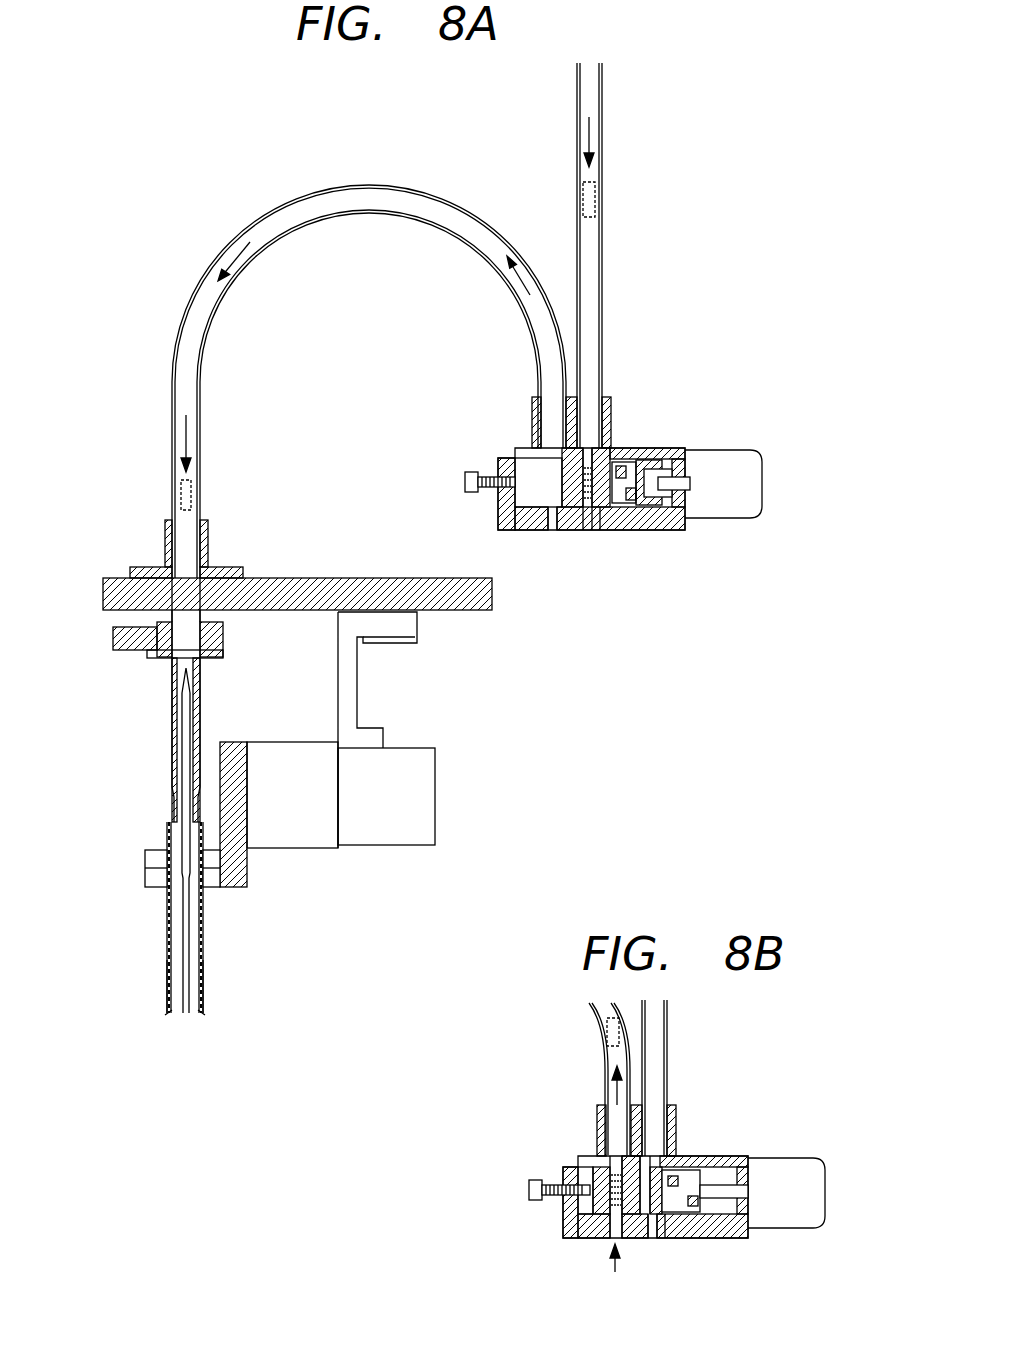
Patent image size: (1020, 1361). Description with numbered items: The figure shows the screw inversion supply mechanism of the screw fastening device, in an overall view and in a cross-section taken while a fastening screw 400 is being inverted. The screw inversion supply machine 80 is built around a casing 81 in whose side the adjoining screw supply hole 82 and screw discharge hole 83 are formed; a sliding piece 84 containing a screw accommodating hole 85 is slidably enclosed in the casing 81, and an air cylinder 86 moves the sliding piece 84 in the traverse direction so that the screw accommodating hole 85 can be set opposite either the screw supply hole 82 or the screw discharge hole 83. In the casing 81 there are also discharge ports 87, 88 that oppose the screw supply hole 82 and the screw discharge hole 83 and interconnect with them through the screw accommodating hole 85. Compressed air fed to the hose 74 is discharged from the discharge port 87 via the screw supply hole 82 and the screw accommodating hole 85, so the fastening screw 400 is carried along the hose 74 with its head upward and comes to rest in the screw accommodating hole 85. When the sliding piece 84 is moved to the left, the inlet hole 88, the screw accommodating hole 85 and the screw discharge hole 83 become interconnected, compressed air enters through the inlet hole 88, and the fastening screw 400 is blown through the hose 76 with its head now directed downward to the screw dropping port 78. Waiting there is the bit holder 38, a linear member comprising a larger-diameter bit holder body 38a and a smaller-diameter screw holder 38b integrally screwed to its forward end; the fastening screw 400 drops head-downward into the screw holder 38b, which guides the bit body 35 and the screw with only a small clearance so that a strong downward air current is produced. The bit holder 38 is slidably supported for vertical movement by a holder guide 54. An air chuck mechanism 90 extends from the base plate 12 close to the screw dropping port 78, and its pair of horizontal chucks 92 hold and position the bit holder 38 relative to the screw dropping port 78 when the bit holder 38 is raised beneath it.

In FIG. 8A, the base plate 12 is at (345, 578).
In FIG. 8A, the bit body 35 is at (184, 764).
In FIG. 8A, the bit holder 38 is at (203, 940).
In FIG. 8A, the bit holder body 38a is at (168, 985).
In FIG. 8A, the screw holder 38b is at (200, 685).
In FIG. 8A, the holder guide 54 is at (152, 665).
In FIG. 8A, the hose 74 is at (603, 210).
In FIG. 8B, the hose 74 is at (668, 1030).
In FIG. 8A, the hose 76 is at (393, 184).
In FIG. 8B, the hose 76 is at (600, 1045).
In FIG. 8A, the screw dropping port 78 is at (167, 548).
In FIG. 8A, the screw inversion supply machine 80 is at (637, 428).
In FIG. 8B, the screw inversion supply machine 80 is at (702, 1136).
In FIG. 8A, the casing 81 is at (655, 532).
In FIG. 8B, the casing 81 is at (700, 1240).
In FIG. 8A, the screw supply hole 82 is at (598, 446).
In FIG. 8B, the screw supply hole 82 is at (668, 1140).
In FIG. 8A, the screw discharge hole 83 is at (548, 440).
In FIG. 8B, the screw discharge hole 83 is at (598, 1130).
In FIG. 8A, the sliding piece 84 is at (582, 532).
In FIG. 8B, the sliding piece 84 is at (625, 1240).
In FIG. 8A, the screw accommodating hole 85 is at (622, 456).
In FIG. 8B, the screw accommodating hole 85 is at (583, 1162).
In FIG. 8A, the air cylinder 86 is at (755, 497).
In FIG. 8B, the air cylinder 86 is at (818, 1192).
In FIG. 8A, the discharge port 87 is at (600, 532).
In FIG. 8B, the discharge port 87 is at (650, 1240).
In FIG. 8A, the inlet hole (discharge port) 88 is at (555, 532).
In FIG. 8B, the inlet hole (discharge port) 88 is at (590, 1240).
In FIG. 8A, the air chuck mechanism 90 is at (124, 851).
In FIG. 8A, the horizontal chuck 92 is at (150, 885).
In FIG. 8A, the fastening screw 400 is at (672, 450).
In FIG. 8B, the fastening screw 400 is at (565, 1215).